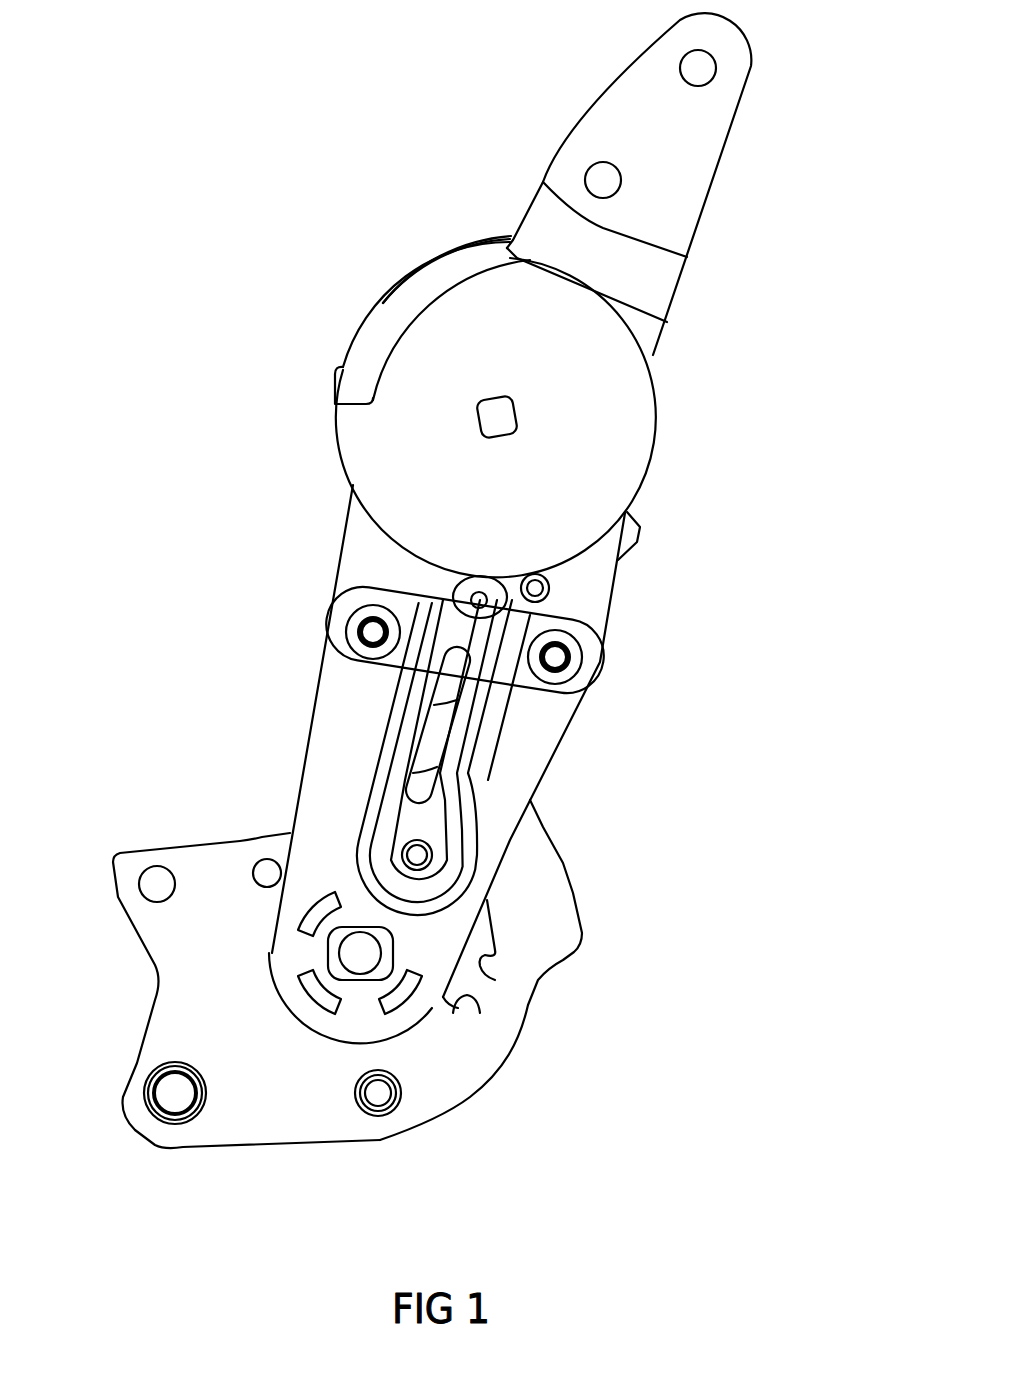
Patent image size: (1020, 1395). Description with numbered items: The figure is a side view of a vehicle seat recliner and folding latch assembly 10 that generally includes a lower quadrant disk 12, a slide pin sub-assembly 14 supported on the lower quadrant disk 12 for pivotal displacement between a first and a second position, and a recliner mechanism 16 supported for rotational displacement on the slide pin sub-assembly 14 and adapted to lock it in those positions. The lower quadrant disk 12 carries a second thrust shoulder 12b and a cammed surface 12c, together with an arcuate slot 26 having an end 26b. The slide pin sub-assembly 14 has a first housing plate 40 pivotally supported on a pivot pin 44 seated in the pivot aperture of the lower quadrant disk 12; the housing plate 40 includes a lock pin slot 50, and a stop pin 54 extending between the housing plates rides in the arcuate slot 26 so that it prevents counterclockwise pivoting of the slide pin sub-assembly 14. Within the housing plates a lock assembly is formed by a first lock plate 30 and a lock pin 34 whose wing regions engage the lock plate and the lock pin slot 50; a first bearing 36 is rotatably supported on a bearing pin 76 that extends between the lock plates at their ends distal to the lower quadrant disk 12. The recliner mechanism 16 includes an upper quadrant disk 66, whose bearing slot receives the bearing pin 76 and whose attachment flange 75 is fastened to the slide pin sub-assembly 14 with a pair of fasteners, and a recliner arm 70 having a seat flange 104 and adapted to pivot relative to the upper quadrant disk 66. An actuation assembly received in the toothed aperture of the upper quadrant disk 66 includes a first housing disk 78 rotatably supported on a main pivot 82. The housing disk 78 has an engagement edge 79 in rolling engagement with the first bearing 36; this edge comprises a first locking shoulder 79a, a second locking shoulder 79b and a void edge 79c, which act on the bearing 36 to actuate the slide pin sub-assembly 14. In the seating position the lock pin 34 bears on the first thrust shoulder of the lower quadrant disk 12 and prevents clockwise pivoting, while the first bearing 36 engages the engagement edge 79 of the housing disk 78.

The vehicle seat recliner and folding latch assembly 10 is at (215, 203).
The lower quadrant disk 12 is at (185, 993).
The second thrust shoulder 12b is at (565, 963).
The cammed surface 12c is at (563, 867).
The slide pin sub-assembly 14 is at (568, 757).
The recliner mechanism 16 is at (662, 413).
The arcuate slot 26 is at (485, 970).
The spring end 26b is at (478, 1010).
The first lock plate 30 is at (457, 680).
The lock pin 34 is at (445, 728).
The first bearing 36 is at (500, 587).
The first housing plate 40 is at (318, 780).
The pivot pin 44 is at (357, 960).
The first lock pin slot 50 is at (407, 773).
The stop pin 54 is at (420, 855).
The upper quadrant disk 66 is at (346, 522).
The recliner arm 70 is at (664, 222).
The attachment flange 75 is at (590, 598).
The bearing pin 76 is at (470, 600).
The first housing disk 78 is at (537, 496).
The engagement edge 79 is at (374, 315).
The first locking shoulder 79a is at (334, 362).
The second locking shoulder 79b is at (490, 280).
The void edge 79c is at (398, 338).
The main pivot 82 is at (502, 412).
The seat flange 104 is at (683, 132).